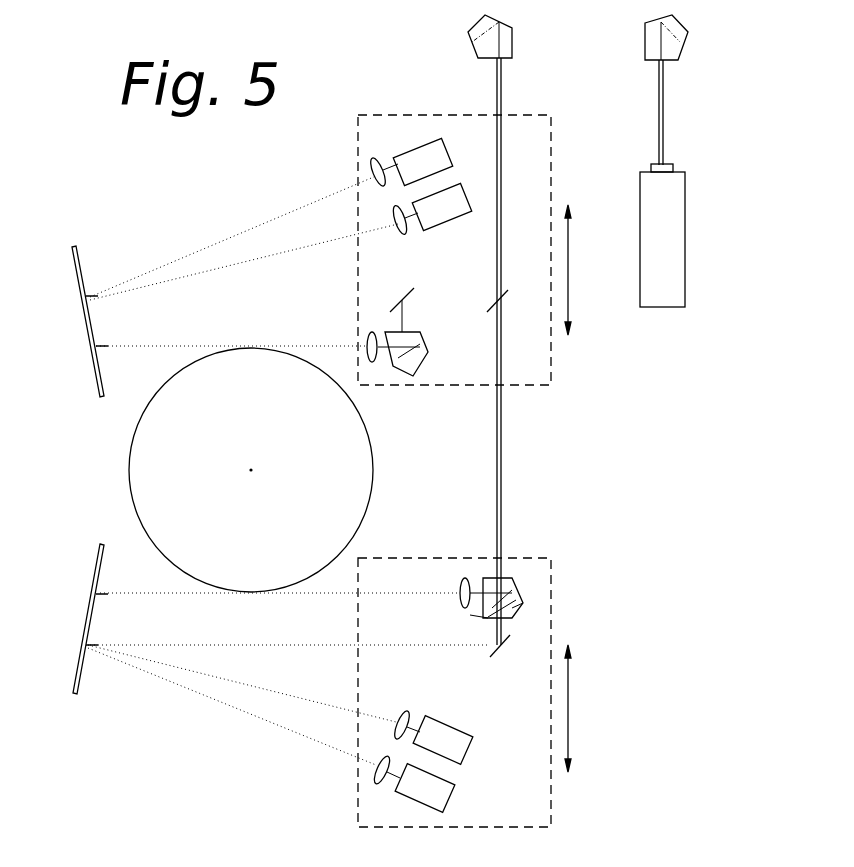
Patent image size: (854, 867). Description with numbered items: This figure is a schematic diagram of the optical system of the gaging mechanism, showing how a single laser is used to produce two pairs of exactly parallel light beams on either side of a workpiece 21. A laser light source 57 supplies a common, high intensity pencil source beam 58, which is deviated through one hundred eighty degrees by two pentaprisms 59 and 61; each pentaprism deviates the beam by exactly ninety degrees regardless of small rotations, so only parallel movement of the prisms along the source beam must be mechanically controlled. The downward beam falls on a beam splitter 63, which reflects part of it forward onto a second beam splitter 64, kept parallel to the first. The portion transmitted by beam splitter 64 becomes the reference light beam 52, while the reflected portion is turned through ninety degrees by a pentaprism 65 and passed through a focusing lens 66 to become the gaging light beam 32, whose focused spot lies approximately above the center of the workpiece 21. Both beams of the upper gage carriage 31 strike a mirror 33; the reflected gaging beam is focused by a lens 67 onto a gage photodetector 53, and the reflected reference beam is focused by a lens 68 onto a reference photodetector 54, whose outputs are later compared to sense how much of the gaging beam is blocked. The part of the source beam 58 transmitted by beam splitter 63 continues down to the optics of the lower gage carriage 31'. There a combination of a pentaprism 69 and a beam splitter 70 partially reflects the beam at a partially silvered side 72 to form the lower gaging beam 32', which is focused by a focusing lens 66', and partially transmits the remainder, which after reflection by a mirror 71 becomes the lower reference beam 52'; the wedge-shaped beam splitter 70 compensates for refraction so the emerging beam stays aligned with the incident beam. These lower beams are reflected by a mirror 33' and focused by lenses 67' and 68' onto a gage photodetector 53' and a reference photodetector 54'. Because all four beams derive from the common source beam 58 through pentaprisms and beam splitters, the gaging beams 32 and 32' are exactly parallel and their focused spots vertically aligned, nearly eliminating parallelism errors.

The workpiece 21 is at (130, 462).
The upper gage carriage 31 is at (474, 250).
The lower gage carriage 31' is at (484, 691).
The gaging light beam 32 is at (231, 333).
The lower gaging beam 32' is at (290, 619).
The mirror 33 is at (68, 321).
The mirror 33' is at (64, 619).
The reference light beam 52 is at (244, 238).
The lower reference beam 52' is at (238, 705).
The gage photodetector 53 is at (441, 216).
The gage photodetector 53' is at (464, 740).
The reference photodetector 54 is at (436, 158).
The reference photodetector 54' is at (450, 788).
The laser light source 57 is at (664, 308).
The source beam 58 is at (503, 96).
The pentaprism 59 is at (660, 24).
The pentaprism 61 is at (506, 22).
The beam splitter 63 is at (503, 300).
The beam splitter 64 is at (410, 294).
The pentaprism 65 is at (422, 362).
The focusing lens 66 is at (391, 374).
The focusing lens 66' is at (444, 561).
The lens 67 is at (368, 220).
The lens 67' is at (427, 709).
The lens 68 is at (349, 170).
The lens 68' is at (352, 779).
The pentaprism 69 is at (508, 578).
The beam splitter 70 is at (486, 616).
The mirror 71 is at (496, 652).
The side of pentaprism 72 is at (518, 616).